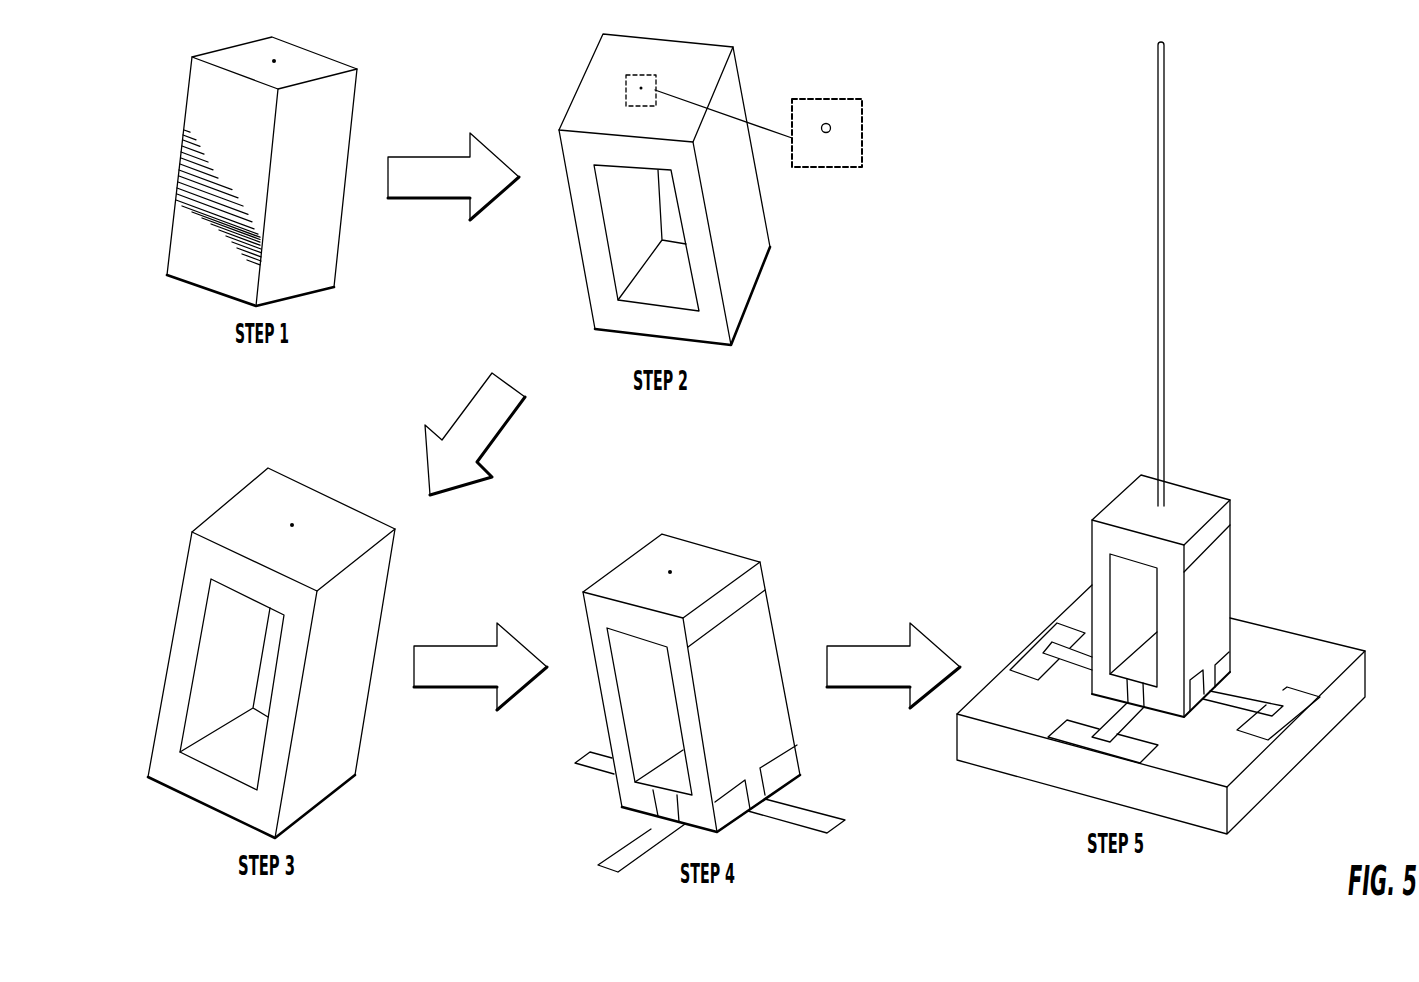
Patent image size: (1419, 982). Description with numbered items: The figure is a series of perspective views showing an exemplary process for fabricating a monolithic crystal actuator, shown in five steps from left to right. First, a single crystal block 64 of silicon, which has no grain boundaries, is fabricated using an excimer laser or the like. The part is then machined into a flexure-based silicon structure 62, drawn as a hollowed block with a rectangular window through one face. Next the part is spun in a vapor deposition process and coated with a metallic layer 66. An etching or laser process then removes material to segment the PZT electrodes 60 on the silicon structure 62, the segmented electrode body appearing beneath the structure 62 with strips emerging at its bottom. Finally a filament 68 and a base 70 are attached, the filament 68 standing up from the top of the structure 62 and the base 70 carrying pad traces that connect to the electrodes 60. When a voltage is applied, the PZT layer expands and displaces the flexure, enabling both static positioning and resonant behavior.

The PZT electrodes 60 is at (747, 682).
The flexure-based silicon structure 62 is at (739, 217).
The single crystal block 64 is at (322, 135).
The metallic layer 66 is at (347, 532).
The filament 68 is at (1164, 220).
The base 70 is at (1297, 669).